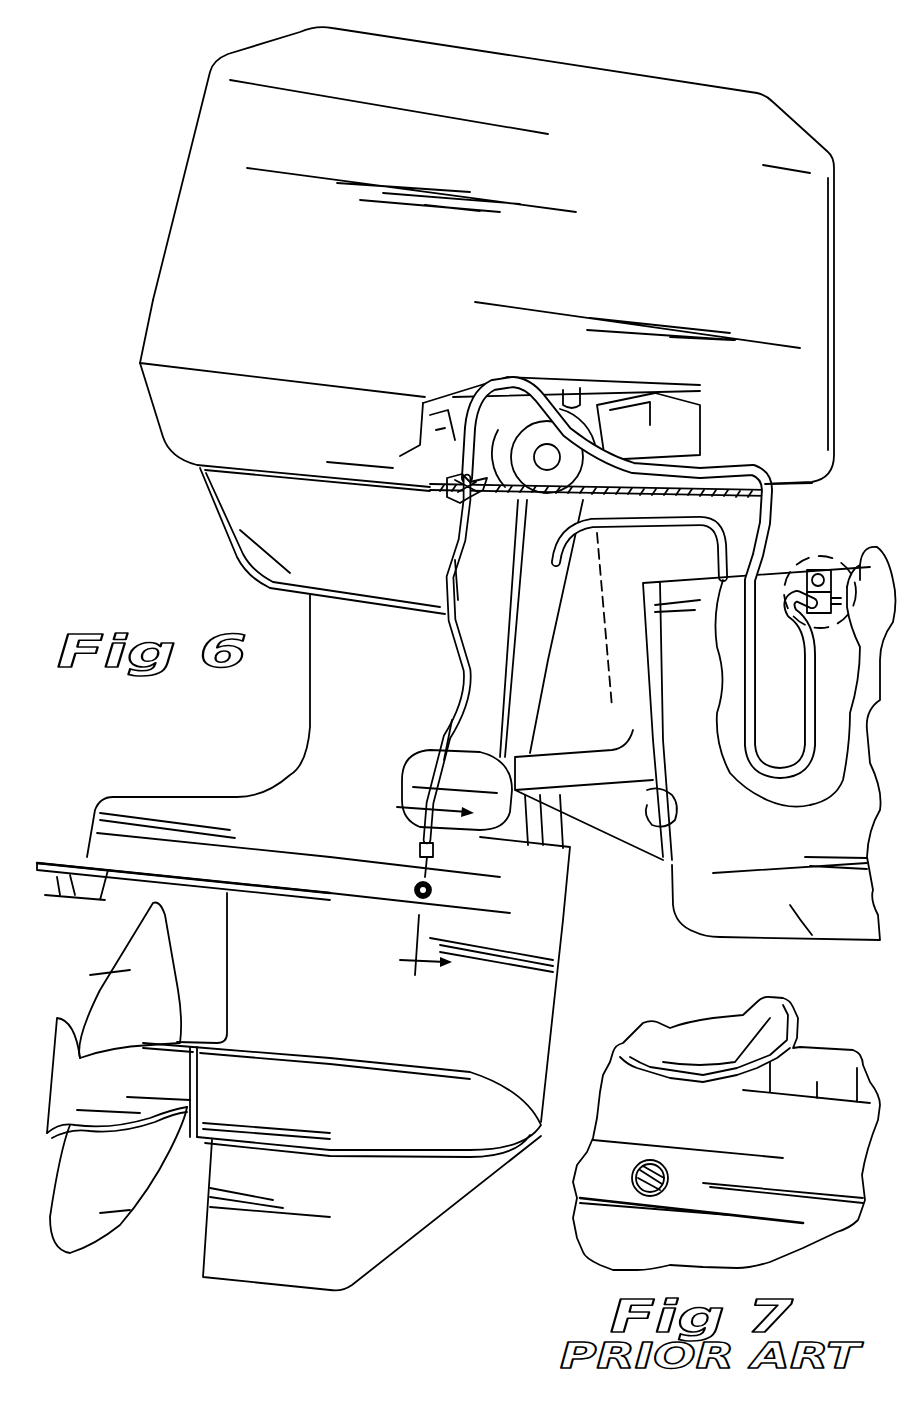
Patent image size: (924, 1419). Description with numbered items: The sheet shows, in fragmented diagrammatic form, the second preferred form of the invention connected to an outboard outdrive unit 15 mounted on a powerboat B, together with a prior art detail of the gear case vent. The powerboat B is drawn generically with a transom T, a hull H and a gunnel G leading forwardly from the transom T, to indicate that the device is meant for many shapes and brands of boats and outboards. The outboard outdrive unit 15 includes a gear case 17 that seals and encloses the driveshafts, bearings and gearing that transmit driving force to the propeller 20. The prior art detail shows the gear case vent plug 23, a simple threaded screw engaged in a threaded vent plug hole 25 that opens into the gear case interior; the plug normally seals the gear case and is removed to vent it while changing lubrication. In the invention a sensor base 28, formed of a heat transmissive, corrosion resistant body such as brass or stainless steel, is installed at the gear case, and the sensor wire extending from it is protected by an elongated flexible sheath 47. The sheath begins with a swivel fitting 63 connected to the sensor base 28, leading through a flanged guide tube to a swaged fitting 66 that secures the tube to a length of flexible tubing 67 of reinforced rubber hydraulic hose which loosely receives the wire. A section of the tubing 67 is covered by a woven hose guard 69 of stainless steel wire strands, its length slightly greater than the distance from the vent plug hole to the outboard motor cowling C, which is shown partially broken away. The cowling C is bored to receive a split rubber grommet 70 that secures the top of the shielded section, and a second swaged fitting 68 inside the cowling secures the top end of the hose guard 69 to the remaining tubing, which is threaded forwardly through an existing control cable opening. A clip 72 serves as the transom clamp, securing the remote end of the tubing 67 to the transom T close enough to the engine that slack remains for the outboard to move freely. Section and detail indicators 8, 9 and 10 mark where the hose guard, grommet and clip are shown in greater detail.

In FIG. 6, the cowling C is at (197, 412).
In FIG. 6, the engine 9 is at (410, 432).
In FIG. 6, the powerhead region 10 is at (824, 488).
In FIG. 6, the second swaged fitting 68 is at (450, 400).
In FIG. 6, the split rubber grommet 70 is at (452, 510).
In FIG. 6, the woven hose guard 69 is at (445, 565).
In FIG. 6, the elongated flexible sheath 47 is at (452, 625).
In FIG. 6, the flexible tubing 67 is at (448, 730).
In FIG. 6, the swaged fitting 66 is at (427, 838).
In FIG. 6, the section line 8 is at (412, 883).
In FIG. 6, the swivel fitting 63 is at (406, 878).
In FIG. 6, the sensor base 28 is at (441, 890).
In FIG. 6, the gear case 17 is at (323, 780).
In FIG. 6, the outboard outdrive unit 15 is at (228, 782).
In FIG. 6, the propeller 20 is at (87, 1013).
In FIG. 6, the clip 72 is at (818, 630).
In FIG. 6, the powerboat B is at (727, 903).
In FIG. 6, the transom T is at (657, 790).
In FIG. 6, the hull H is at (793, 903).
In FIG. 6, the gunnel G is at (881, 602).
In FIG. 7, the vent plug hole 25 is at (637, 1165).
In FIG. 7, the vent plug 23 is at (660, 1198).